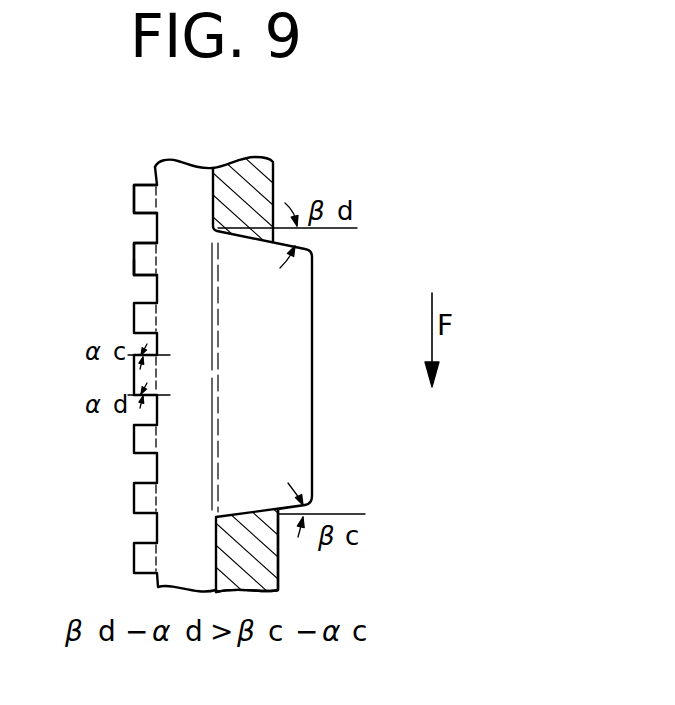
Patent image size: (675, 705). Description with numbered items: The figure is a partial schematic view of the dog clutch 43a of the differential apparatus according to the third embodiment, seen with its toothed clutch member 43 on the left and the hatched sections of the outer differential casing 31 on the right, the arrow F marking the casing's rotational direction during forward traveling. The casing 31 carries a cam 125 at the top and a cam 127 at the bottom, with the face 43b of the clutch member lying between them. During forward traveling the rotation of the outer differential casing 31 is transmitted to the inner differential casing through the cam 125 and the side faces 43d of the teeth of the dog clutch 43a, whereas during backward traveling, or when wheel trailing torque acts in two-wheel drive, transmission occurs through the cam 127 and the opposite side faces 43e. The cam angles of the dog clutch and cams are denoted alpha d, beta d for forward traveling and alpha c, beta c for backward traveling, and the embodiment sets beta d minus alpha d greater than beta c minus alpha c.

The clutch member 43 is at (182, 158).
The dog clutch 43a is at (129, 197).
The opposite side faces of the teeth 43e is at (134, 244).
The side faces of the teeth 43d is at (135, 276).
The cam face of the dog clutch 43b is at (245, 377).
The outer differential casing 31 is at (255, 158).
The cam 125 is at (360, 240).
The cam 127 is at (363, 497).